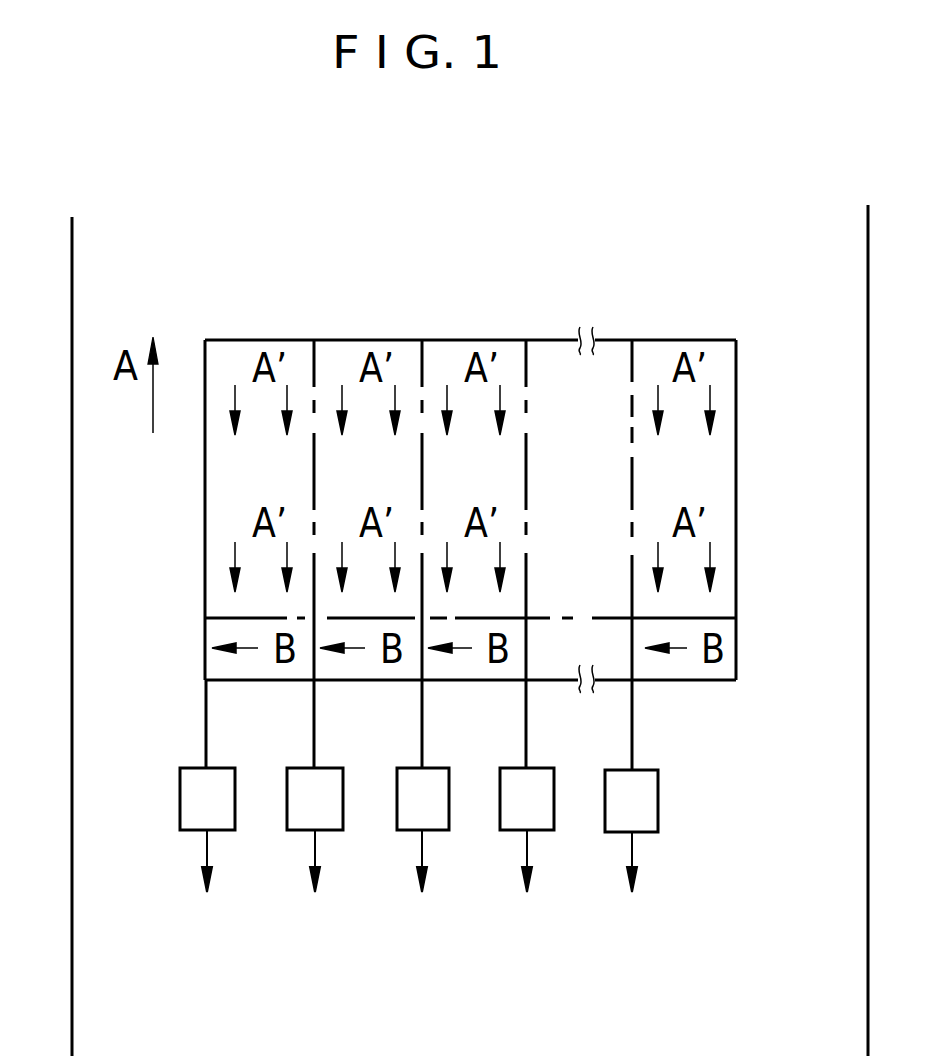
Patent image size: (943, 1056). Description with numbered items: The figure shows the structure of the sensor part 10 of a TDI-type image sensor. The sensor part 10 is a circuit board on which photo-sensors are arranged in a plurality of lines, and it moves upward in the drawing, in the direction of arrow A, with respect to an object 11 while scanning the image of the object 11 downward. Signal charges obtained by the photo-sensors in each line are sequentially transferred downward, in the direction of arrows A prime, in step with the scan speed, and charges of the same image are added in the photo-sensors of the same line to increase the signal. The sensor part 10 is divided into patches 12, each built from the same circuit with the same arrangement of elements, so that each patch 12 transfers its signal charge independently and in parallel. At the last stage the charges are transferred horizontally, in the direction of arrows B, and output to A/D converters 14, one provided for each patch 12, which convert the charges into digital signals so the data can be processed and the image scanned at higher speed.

The sensor part 10 is at (738, 563).
The object 11 is at (68, 592).
The patch 12 is at (232, 350).
The A/D converter 14 is at (182, 798).